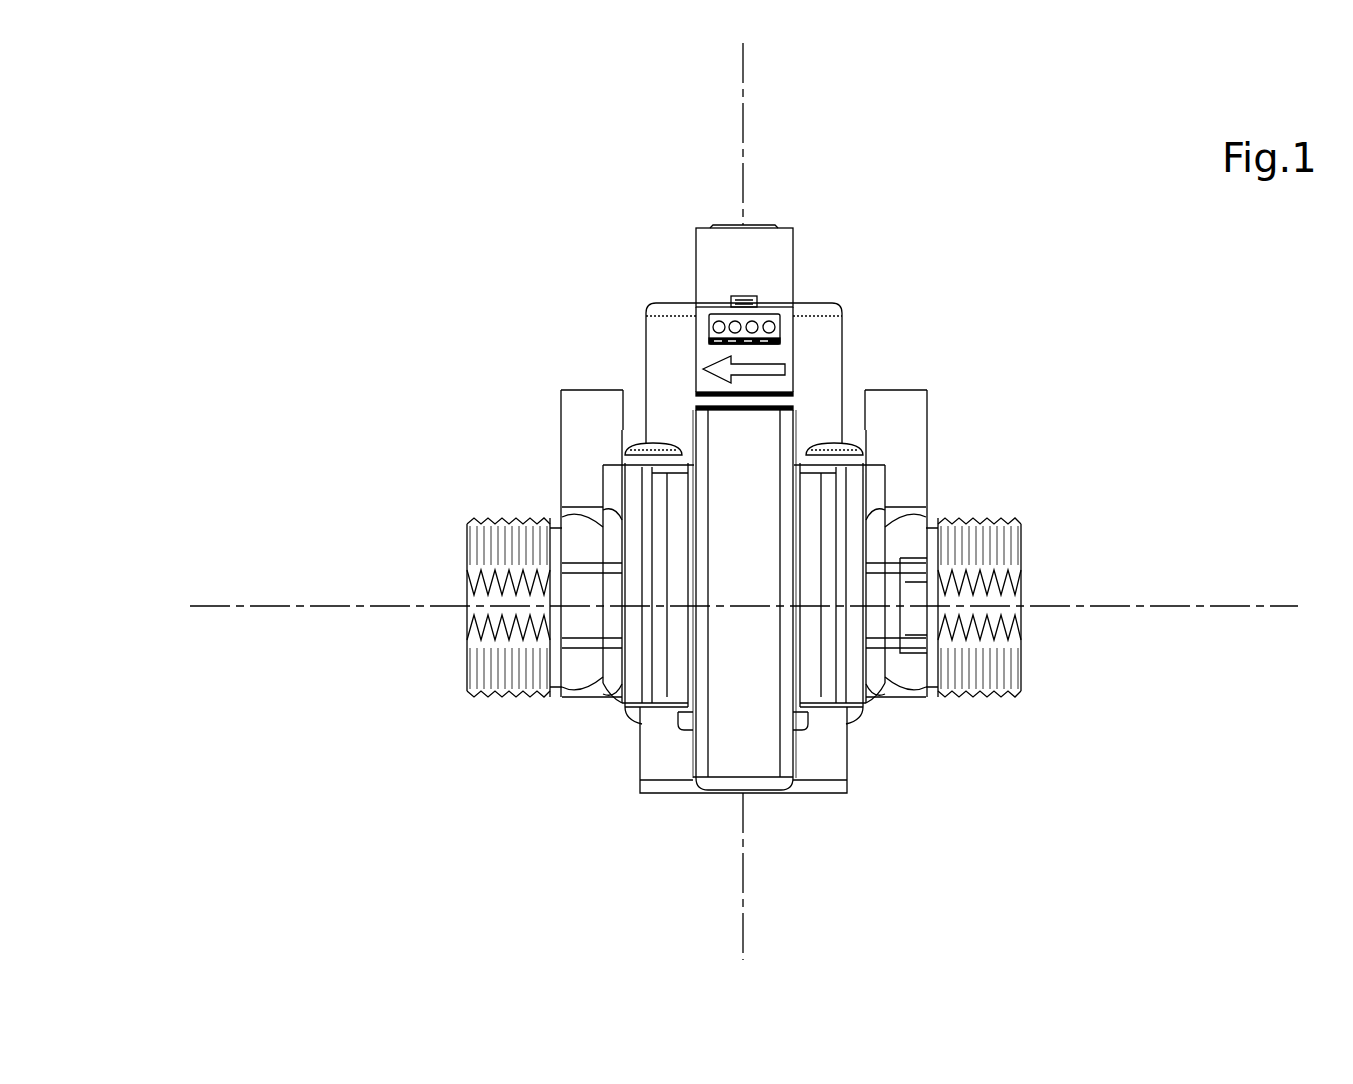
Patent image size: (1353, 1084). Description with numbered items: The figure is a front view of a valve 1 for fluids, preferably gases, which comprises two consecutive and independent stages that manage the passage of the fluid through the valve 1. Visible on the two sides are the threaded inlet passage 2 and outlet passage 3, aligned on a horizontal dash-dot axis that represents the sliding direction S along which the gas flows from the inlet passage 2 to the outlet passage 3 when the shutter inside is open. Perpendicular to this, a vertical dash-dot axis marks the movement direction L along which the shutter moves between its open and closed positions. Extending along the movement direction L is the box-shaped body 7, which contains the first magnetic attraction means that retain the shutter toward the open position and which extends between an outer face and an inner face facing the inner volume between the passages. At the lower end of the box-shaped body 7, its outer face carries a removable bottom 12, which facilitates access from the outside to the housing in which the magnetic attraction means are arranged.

The valve 1 is at (207, 173).
The inlet passage 2 is at (1034, 581).
The outlet passage 3 is at (457, 546).
The box-shaped body 7 is at (823, 762).
The removable bottom 12 is at (640, 790).
The movement direction L is at (743, 163).
The sliding direction S is at (317, 606).